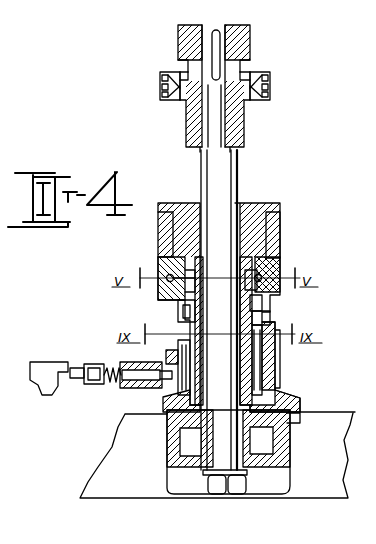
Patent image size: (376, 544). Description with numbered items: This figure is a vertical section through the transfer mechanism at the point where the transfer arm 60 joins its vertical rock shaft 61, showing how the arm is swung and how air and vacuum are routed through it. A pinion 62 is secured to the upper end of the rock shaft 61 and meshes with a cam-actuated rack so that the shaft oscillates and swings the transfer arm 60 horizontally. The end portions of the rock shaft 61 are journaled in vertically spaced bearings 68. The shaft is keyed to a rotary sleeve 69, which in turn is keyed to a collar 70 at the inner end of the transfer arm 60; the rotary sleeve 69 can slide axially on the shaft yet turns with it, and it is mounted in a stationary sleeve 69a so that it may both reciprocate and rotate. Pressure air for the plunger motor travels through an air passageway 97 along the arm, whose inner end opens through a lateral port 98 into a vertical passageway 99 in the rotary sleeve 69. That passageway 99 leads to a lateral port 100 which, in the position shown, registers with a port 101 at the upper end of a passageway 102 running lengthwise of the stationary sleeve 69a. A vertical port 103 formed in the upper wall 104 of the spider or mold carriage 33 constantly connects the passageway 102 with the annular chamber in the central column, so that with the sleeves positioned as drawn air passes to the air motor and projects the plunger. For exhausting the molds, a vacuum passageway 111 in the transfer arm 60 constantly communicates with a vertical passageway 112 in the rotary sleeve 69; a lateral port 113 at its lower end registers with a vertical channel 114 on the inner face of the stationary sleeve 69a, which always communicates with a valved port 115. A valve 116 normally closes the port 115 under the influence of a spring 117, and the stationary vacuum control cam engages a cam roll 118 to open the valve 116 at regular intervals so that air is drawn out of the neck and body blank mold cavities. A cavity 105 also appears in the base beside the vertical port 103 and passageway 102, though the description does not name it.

The pinion 62 is at (252, 47).
The bearings 68 is at (240, 120).
The rock shaft 61 is at (223, 173).
The rotary sleeve 69 is at (247, 207).
The collar 70 is at (280, 227).
The transfer arm 60 is at (162, 295).
The vacuum passageway 111 is at (165, 276).
The vertical passageway 112 is at (178, 305).
The lateral port 98 is at (275, 262).
The air passageway 97 is at (270, 277).
The vertical passageway 99 is at (262, 303).
The lateral port 100 is at (268, 318).
The port 101 is at (262, 335).
The passageway 102 is at (270, 372).
The stationary sleeve 69a is at (270, 387).
The upper wall 104 is at (298, 408).
The vertical port 103 is at (267, 420).
The cavity 105 is at (268, 444).
The lateral port 113 is at (193, 442).
The channel 114 is at (167, 383).
The valved port 115 is at (140, 383).
The valve 116 is at (166, 357).
The spring 117 is at (118, 360).
The cam roll 118 is at (92, 364).
The mold carriage 33 is at (303, 488).